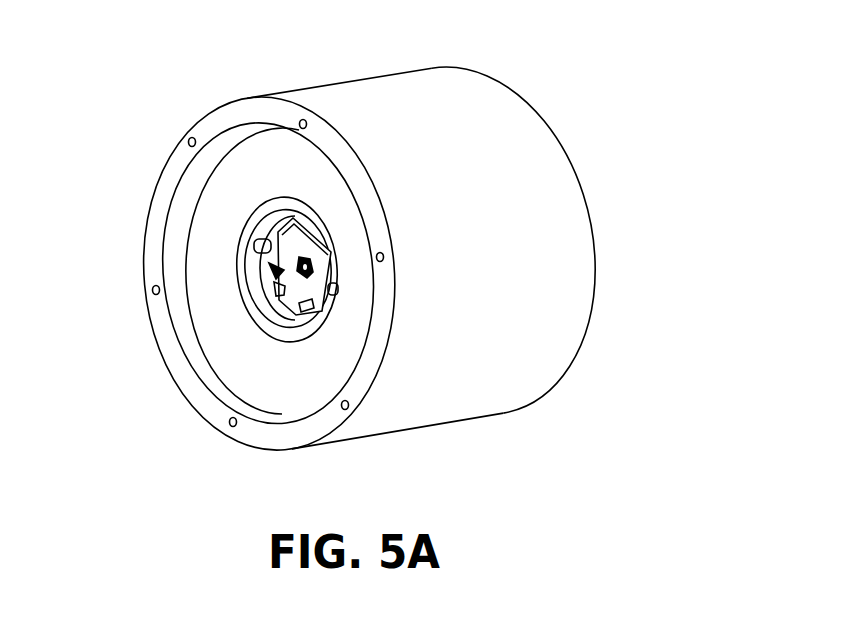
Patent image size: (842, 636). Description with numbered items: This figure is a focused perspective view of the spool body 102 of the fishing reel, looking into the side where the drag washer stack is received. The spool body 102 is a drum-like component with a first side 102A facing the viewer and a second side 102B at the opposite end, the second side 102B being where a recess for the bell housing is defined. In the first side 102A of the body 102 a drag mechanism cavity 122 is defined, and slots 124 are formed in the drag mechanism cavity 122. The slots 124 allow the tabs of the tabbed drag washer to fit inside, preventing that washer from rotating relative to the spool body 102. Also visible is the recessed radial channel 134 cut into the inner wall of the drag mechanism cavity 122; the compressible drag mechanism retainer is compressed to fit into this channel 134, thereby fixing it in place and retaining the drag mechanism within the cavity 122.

The spool body 102 is at (382, 115).
The first side 102A is at (148, 155).
The second side 102B is at (598, 175).
The drag mechanism cavity 122 is at (273, 307).
The slots 124 is at (254, 244).
The recessed radial channel 134 is at (272, 292).